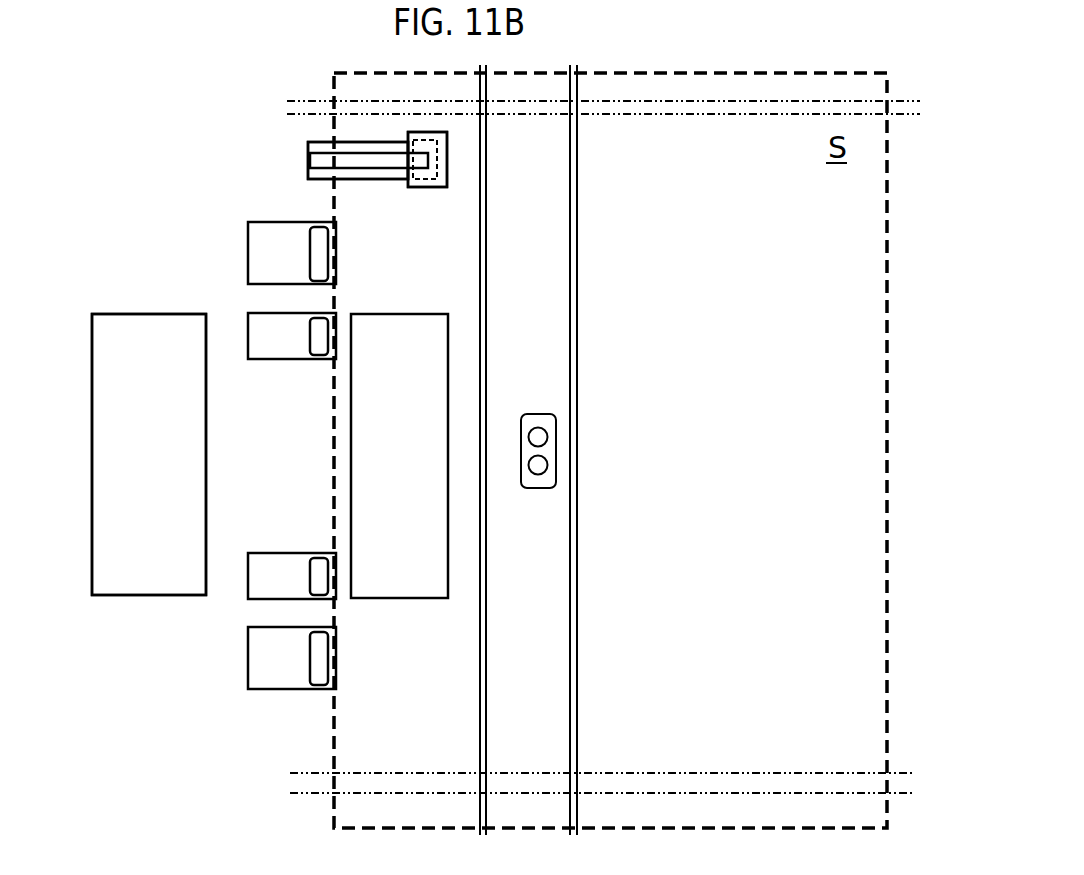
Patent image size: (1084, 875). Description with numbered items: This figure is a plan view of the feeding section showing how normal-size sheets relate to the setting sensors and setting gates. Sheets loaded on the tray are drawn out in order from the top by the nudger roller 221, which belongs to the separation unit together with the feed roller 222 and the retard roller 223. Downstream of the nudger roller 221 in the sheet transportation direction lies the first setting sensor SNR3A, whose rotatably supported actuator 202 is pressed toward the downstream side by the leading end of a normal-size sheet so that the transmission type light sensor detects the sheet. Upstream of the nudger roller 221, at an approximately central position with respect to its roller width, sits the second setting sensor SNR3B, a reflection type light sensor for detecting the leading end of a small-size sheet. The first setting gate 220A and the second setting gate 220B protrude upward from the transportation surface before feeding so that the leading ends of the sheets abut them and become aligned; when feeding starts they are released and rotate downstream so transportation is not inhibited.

The actuator 202 is at (357, 159).
The first setting sensor SNR3A is at (377, 159).
The first setting gate 220A is at (318, 252).
The second setting gate 220B is at (319, 344).
The nudger roller 221 is at (380, 335).
The feed roller 222 is at (143, 334).
The retard roller 223 is at (149, 454).
The second setting sensor SNR3B is at (560, 448).